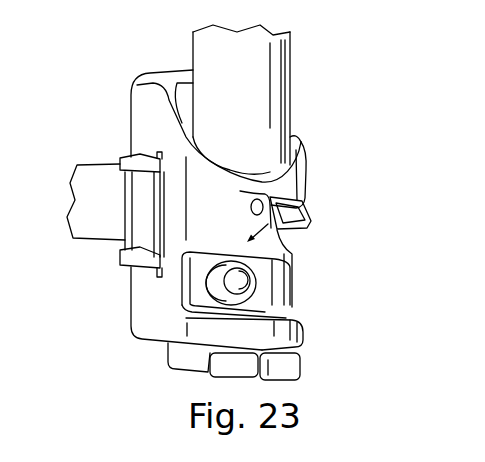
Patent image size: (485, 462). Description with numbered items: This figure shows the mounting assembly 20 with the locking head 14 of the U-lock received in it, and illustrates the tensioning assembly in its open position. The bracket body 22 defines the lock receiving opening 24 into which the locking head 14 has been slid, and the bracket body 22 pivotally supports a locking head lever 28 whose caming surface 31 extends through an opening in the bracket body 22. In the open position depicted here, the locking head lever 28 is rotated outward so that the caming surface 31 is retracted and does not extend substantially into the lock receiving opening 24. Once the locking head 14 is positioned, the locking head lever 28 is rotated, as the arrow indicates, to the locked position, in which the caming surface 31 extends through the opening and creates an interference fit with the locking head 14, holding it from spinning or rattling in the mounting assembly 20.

The locking head 14 is at (292, 52).
The mounting assembly 20 is at (120, 115).
The bracket body 22 is at (306, 321).
The lock receiving opening 24 is at (292, 158).
The locking head lever 28 is at (307, 224).
The caming surface 31 is at (279, 238).